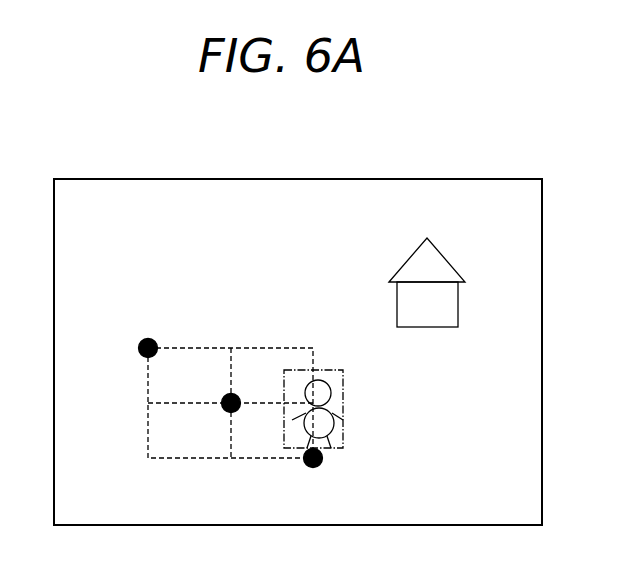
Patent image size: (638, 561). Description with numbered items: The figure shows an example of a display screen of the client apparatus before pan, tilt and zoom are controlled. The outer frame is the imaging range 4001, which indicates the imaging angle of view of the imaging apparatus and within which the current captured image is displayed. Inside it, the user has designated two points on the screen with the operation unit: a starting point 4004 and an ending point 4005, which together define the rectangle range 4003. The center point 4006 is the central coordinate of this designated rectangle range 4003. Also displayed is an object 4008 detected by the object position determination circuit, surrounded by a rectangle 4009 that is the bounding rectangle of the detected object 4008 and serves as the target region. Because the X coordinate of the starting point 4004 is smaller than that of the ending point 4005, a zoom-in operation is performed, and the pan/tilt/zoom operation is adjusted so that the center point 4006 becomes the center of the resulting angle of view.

The imaging range 4001 is at (453, 179).
The rectangle range 4003 is at (273, 348).
The starting point 4004 is at (148, 338).
The ending point 4005 is at (322, 463).
The center point 4006 is at (231, 404).
The object 4008 is at (332, 392).
The rectangle 4009 is at (328, 368).